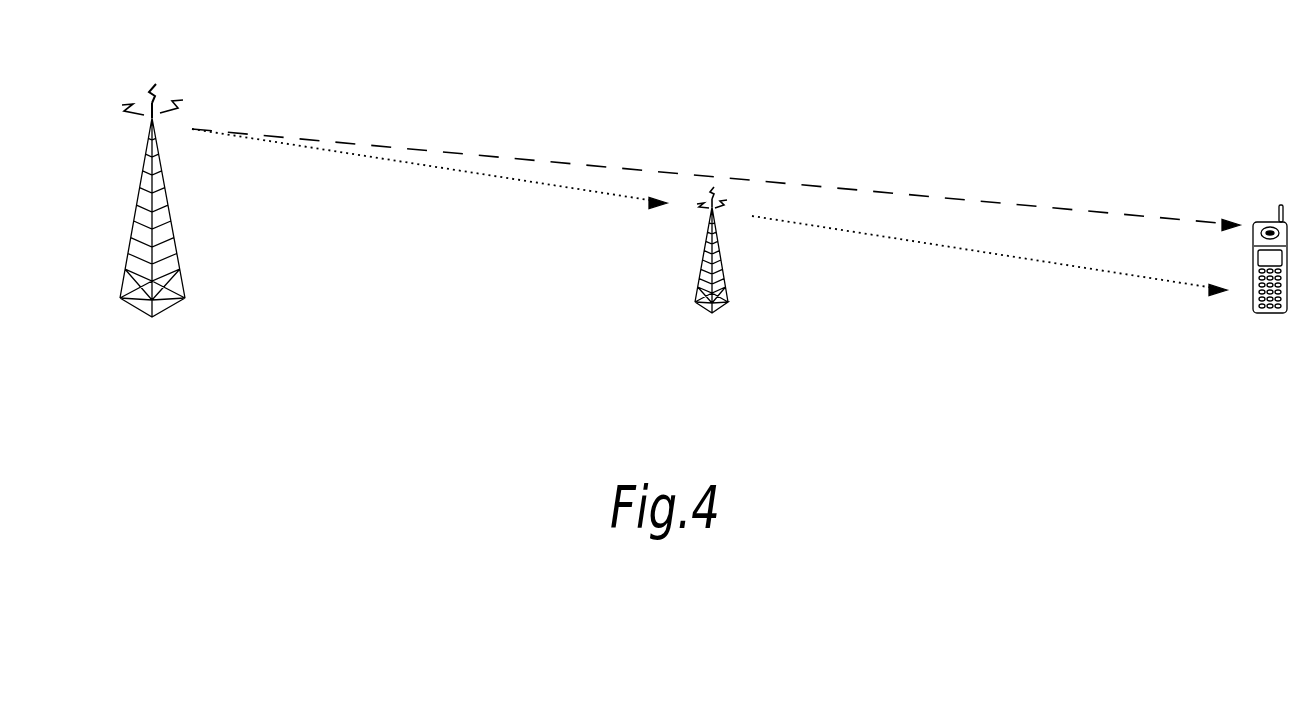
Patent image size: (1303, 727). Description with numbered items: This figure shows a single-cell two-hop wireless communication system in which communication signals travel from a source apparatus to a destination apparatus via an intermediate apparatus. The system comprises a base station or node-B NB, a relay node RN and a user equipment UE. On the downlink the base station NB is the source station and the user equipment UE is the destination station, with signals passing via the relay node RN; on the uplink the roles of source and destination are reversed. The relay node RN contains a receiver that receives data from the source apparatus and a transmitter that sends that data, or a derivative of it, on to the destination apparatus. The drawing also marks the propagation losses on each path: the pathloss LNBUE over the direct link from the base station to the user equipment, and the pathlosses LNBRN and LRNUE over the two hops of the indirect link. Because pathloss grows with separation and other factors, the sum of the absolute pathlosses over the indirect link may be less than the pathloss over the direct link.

The base station (node-B) NB is at (132, 241).
The relay node RN is at (729, 289).
The user equipment UE is at (1270, 279).
The direct link pathloss LNBUE is at (716, 180).
The base station to relay node link pathloss LNBRN is at (429, 185).
The relay node to user equipment link pathloss LRNUE is at (989, 269).